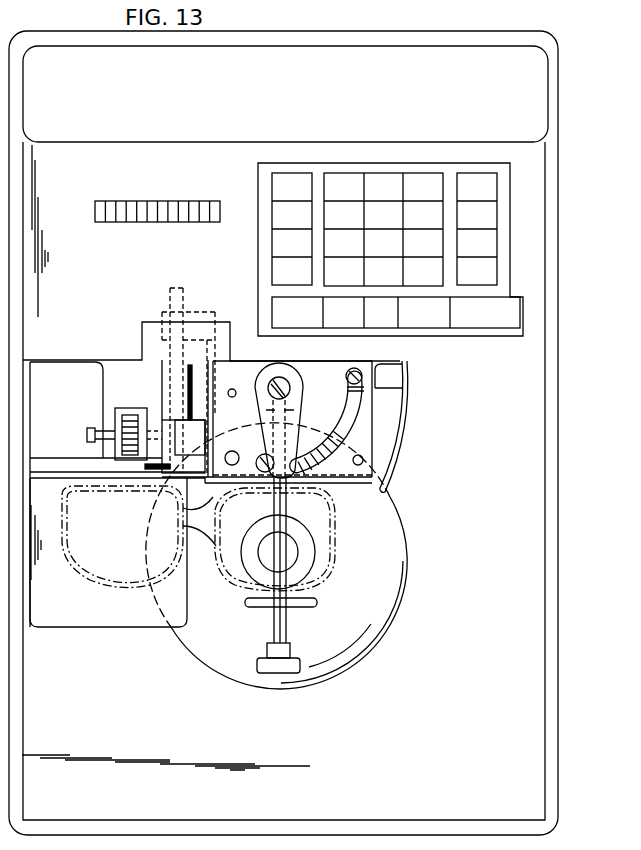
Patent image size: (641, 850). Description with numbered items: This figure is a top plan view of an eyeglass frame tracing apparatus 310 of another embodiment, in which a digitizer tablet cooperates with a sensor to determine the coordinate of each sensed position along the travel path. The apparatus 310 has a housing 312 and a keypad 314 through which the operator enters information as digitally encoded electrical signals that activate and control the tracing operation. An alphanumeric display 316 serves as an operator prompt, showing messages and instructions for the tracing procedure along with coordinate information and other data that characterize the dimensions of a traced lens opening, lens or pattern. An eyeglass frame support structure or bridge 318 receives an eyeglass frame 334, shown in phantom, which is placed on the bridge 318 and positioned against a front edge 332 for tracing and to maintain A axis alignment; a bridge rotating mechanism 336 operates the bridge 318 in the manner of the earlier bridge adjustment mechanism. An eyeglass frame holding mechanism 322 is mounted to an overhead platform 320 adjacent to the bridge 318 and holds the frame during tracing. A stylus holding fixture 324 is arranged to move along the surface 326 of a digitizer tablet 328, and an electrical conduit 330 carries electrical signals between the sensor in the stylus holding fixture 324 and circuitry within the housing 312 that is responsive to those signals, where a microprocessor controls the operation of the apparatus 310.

The frame tracing apparatus 310 is at (386, 26).
The housing 312 is at (558, 182).
The keypad 314 is at (254, 193).
The alphanumeric display 316 is at (117, 200).
The bridge 318 is at (73, 632).
The overhead platform 320 is at (407, 388).
The eyeglass frame holding mechanism 322 is at (302, 616).
The stylus holding fixture 324 is at (397, 503).
The surface 326 is at (457, 699).
The digitizer tablet 328 is at (552, 489).
The electrical conduit 330 is at (405, 415).
The front edge 332 is at (106, 537).
The eyeglass frame 334 is at (70, 567).
The bridge rotating mechanism 336 is at (97, 420).